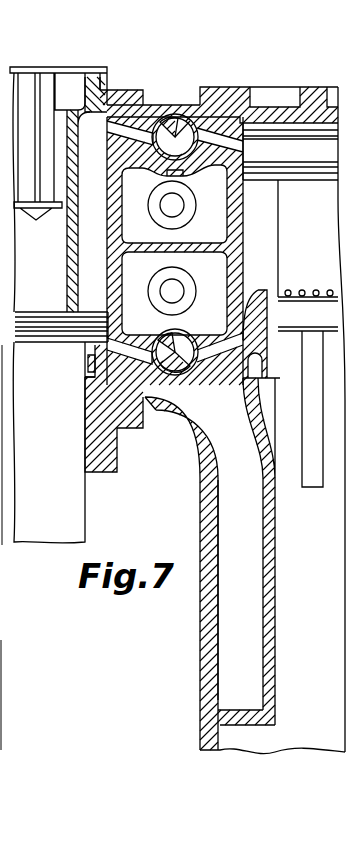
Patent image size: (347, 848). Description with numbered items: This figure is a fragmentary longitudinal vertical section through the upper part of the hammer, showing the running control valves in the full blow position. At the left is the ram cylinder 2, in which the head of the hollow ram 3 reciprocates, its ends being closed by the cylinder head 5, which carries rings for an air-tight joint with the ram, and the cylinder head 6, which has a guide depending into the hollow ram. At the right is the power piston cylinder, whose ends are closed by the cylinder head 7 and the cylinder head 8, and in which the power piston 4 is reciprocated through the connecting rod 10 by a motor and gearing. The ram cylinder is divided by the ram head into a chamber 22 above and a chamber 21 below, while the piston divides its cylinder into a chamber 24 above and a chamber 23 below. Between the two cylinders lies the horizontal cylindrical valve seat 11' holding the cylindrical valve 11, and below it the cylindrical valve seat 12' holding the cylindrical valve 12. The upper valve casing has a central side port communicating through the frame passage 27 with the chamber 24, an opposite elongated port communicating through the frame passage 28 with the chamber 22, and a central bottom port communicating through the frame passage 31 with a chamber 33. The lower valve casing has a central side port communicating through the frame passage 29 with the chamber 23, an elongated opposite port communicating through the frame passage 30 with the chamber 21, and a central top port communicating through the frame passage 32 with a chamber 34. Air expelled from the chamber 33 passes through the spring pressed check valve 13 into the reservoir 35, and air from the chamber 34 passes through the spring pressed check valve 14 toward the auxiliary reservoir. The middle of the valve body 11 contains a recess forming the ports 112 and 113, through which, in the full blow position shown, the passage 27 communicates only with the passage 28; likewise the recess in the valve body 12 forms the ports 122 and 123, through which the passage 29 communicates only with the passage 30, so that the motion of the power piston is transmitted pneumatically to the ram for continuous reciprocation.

The ram cylinder 2 is at (206, 508).
The hollow ram 3 is at (49, 308).
The power piston 4 is at (271, 151).
The cylinder head 5 is at (118, 455).
The cylinder head 6 is at (114, 92).
The cylinder head 7 is at (226, 100).
The cylinder head 8 is at (272, 356).
The connecting rod 10 is at (302, 465).
The cylindrical valve 11 is at (175, 116).
The cylindrical valve seat 11' is at (179, 106).
The cylindrical valve 12 is at (192, 373).
The cylindrical valve seat 12' is at (171, 383).
The spring pressed check valve 13 is at (196, 206).
The spring pressed check valve 14 is at (196, 284).
The chamber 21 is at (100, 348).
The chamber 22 is at (87, 211).
The chamber 23 is at (294, 240).
The chamber 24 is at (278, 127).
The frame passage 27 is at (220, 140).
The frame passage 28 is at (130, 133).
The frame passage 29 is at (220, 347).
The frame passage 30 is at (129, 351).
The frame passage 31 is at (170, 173).
The frame passage 32 is at (166, 331).
The chamber 33 is at (174, 204).
The chamber 34 is at (174, 293).
The reservoir 35 is at (233, 590).
The port 112 is at (180, 108).
The port 113 is at (172, 125).
The port 122 is at (196, 331).
The port 123 is at (95, 380).